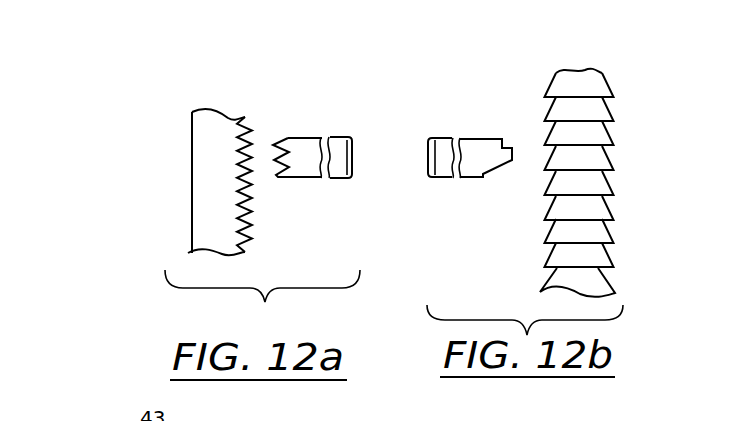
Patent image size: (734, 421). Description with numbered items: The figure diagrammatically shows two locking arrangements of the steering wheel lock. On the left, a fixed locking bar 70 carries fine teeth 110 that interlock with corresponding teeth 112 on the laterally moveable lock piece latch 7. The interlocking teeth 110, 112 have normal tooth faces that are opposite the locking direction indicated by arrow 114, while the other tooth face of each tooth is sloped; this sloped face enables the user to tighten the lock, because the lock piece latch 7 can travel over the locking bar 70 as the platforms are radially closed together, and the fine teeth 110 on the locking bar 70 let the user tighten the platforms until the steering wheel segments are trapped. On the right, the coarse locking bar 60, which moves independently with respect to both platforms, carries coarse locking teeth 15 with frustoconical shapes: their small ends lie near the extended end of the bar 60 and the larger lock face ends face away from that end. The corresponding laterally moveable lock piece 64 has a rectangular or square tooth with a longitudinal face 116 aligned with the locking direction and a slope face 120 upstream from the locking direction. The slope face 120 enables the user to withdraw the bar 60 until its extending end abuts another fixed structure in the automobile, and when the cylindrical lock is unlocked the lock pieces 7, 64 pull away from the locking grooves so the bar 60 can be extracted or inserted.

In FIG. 12A, the locking bar 70 is at (191, 200).
In FIG. 12A, the fine teeth 110 is at (253, 140).
In FIG. 12A, the interlocking teeth 112 is at (273, 148).
In FIG. 12A, the lock piece latch 7 is at (349, 131).
In FIG. 12A, the arrow 114 is at (311, 187).
In FIG. 12B, the lock piece 64 is at (473, 137).
In FIG. 12B, the longitudinal face 116 is at (506, 146).
In FIG. 12B, the slope face 120 is at (497, 176).
In FIG. 12B, the coarse locking teeth 15 is at (548, 233).
In FIG. 12B, the coarse locking bar 60 is at (607, 183).